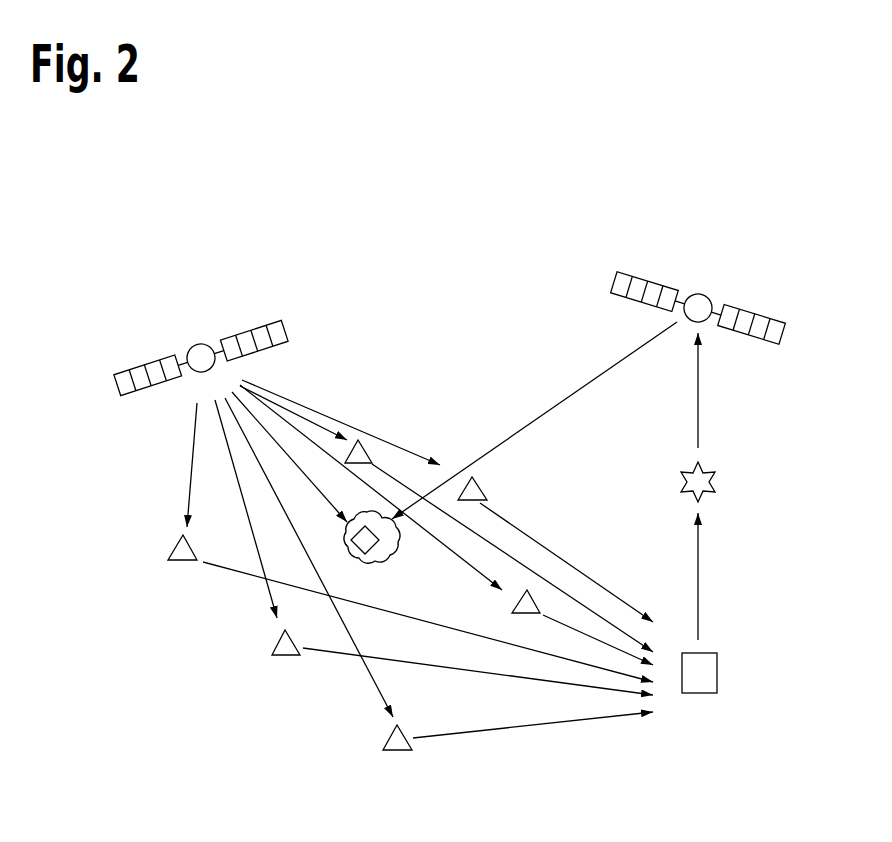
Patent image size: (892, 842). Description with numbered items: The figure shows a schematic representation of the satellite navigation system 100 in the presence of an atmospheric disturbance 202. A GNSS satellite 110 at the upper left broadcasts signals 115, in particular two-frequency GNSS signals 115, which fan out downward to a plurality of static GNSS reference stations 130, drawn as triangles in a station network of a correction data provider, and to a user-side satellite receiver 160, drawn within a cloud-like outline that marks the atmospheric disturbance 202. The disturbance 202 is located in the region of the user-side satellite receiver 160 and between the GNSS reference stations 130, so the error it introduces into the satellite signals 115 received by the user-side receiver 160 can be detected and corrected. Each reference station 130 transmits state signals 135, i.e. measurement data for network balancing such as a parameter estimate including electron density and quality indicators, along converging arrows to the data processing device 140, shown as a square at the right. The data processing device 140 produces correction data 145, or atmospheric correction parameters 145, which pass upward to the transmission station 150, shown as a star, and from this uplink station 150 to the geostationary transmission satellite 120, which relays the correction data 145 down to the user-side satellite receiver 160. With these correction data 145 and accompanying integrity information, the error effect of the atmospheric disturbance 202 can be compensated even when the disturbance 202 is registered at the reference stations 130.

The satellite navigation system 100 is at (168, 192).
The GNSS satellite 110 is at (201, 344).
The geostationary transmission satellite 120 is at (698, 294).
The signals 115 is at (235, 410).
The GNSS receiving stations 130 is at (170, 549).
The state signals 135 is at (530, 652).
The data processing device 140 is at (718, 676).
The correction data 145 is at (520, 430).
The transmission station 150 is at (715, 484).
The user-side satellite receiver 160 is at (386, 566).
The atmospheric disturbance 202 is at (367, 512).